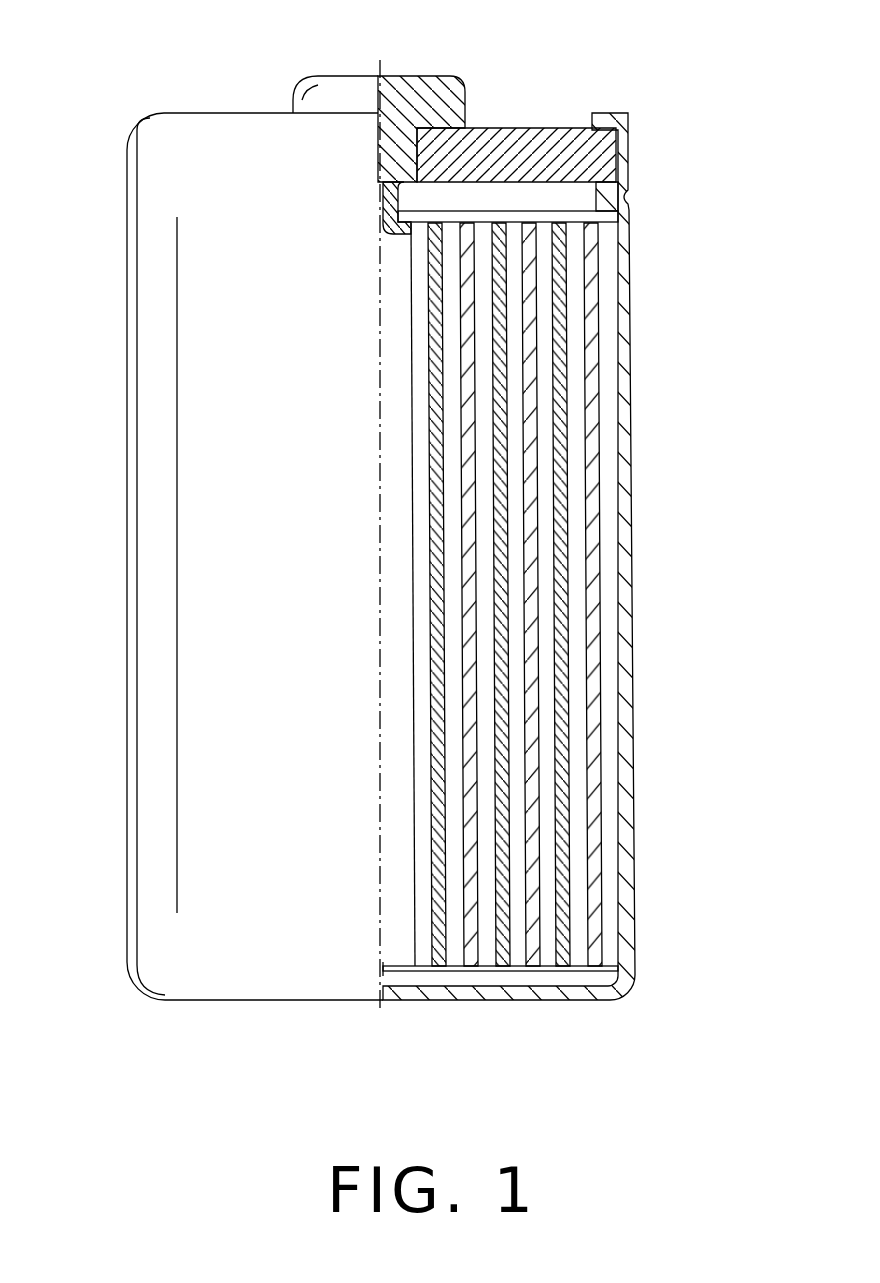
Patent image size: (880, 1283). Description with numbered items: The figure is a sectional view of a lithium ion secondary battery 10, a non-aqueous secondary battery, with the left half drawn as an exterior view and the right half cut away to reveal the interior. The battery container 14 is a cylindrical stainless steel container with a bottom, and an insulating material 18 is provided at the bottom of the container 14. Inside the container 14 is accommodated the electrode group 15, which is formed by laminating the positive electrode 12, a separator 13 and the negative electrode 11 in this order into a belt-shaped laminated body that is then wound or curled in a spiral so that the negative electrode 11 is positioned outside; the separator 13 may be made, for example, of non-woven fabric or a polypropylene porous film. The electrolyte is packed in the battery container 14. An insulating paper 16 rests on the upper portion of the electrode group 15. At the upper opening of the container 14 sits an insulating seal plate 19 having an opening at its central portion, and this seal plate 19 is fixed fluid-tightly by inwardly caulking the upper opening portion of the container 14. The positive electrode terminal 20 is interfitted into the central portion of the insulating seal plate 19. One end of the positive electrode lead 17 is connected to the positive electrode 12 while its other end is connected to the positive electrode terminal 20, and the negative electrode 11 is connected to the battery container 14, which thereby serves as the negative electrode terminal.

The lithium ion secondary battery 10 is at (110, 142).
The negative electrode 11 is at (592, 532).
The positive electrode 12 is at (557, 360).
The separator 13 is at (573, 432).
The battery container 14 is at (634, 833).
The electrode group 15 is at (601, 594).
The insulating paper 16 is at (595, 218).
The positive electrode lead 17 is at (383, 230).
The insulating material 18 is at (475, 978).
The insulating seal plate 19 is at (553, 128).
The positive electrode terminal 20 is at (409, 75).